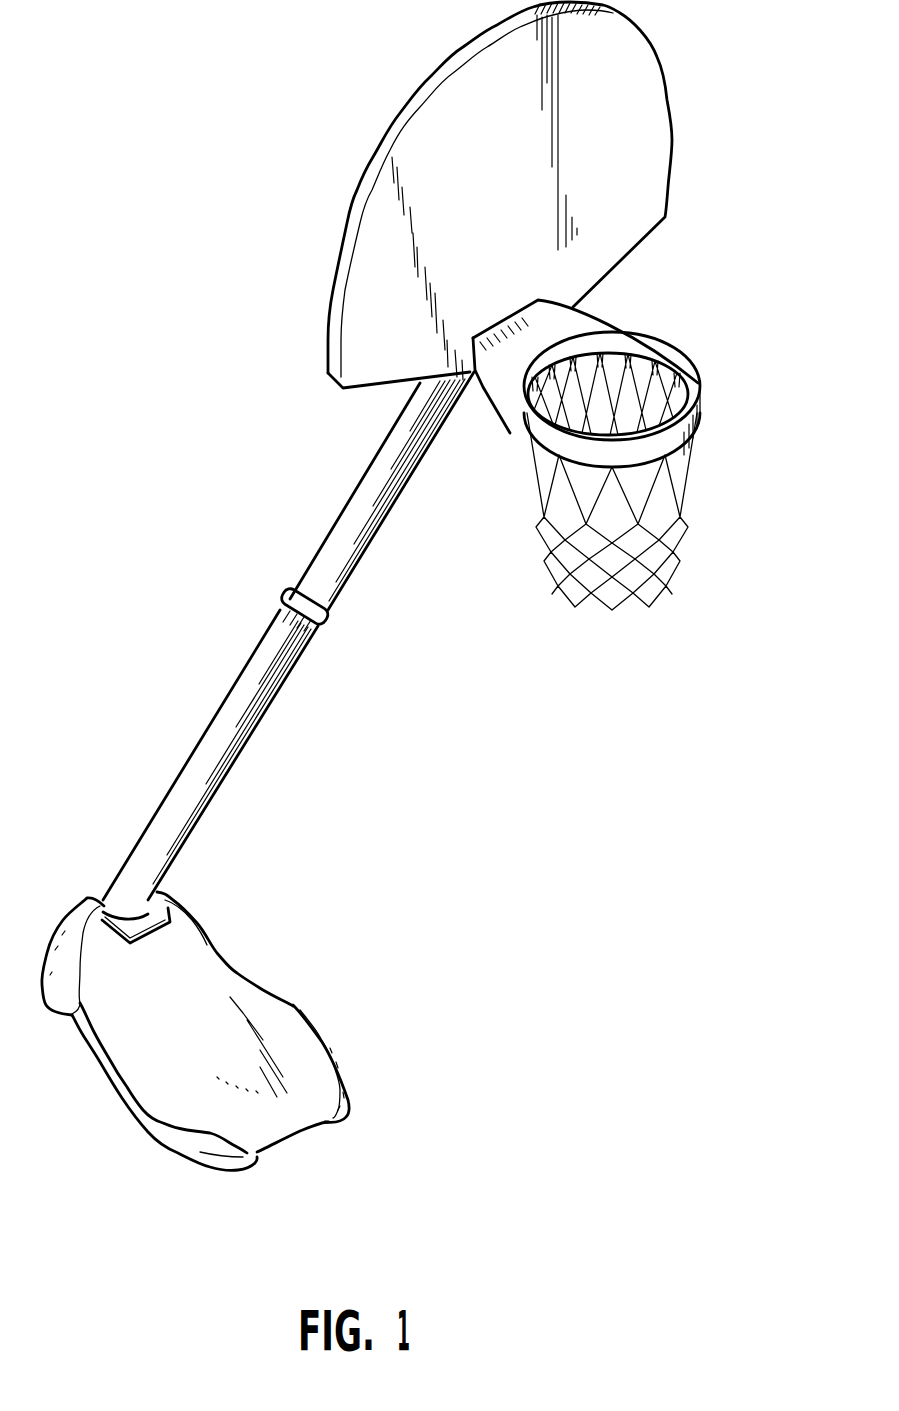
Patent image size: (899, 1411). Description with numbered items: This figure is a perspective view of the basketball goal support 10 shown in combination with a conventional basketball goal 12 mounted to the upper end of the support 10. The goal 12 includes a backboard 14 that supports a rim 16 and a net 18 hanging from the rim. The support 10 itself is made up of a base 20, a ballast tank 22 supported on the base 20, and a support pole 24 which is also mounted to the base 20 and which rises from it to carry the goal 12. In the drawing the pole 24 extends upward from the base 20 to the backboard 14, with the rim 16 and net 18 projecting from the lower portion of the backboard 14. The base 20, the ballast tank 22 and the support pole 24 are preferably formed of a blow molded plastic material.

The basketball goal support 10 is at (255, 600).
The basketball goal 12 is at (657, 57).
The backboard 14 is at (428, 140).
The rim 16 is at (667, 338).
The net 18 is at (540, 533).
The base 20 is at (233, 1170).
The ballast tank 22 is at (295, 1003).
The support pole 24 is at (226, 697).